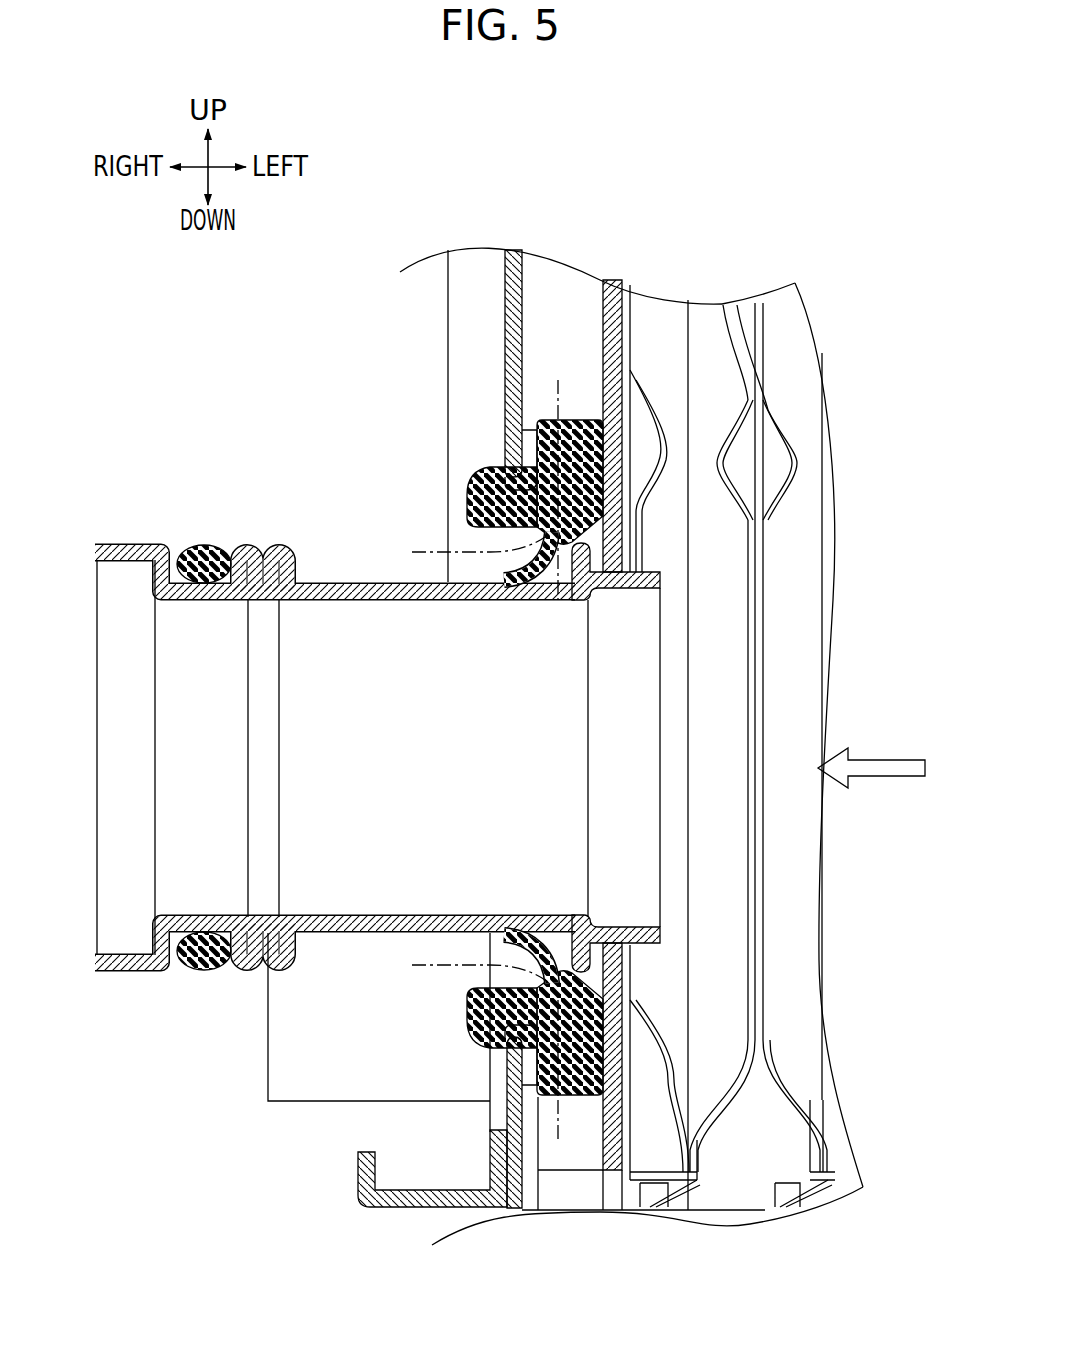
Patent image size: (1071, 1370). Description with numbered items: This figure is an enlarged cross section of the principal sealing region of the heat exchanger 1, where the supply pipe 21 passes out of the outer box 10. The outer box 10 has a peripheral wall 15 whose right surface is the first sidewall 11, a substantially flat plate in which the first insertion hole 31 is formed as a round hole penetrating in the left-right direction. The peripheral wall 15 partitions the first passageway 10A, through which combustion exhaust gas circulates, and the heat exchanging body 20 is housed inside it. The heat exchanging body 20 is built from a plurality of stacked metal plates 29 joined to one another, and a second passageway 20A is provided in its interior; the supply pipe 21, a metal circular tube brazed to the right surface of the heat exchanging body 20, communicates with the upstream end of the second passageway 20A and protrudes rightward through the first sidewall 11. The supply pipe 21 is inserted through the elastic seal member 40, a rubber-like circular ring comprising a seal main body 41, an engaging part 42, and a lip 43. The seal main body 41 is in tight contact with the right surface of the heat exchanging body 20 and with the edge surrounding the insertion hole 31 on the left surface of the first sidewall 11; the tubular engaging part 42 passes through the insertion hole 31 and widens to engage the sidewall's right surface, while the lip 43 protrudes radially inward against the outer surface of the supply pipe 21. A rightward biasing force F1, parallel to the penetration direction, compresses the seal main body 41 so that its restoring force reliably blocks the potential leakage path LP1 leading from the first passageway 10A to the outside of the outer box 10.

The heat exchanger 1 is at (723, 214).
The outer box 10 is at (444, 350).
The first passageway 10A is at (554, 293).
The first sidewall 11 is at (510, 262).
The peripheral wall 15 is at (502, 290).
The heat exchanging body 20 is at (822, 318).
The second passageway 20A is at (793, 870).
The supply pipe 21 is at (127, 768).
The metal plates 29 is at (615, 332).
The first insertion hole 31 is at (520, 548).
The elastic seal member 40 is at (463, 1015).
The seal main body 41 is at (580, 430).
The engaging part 42 is at (493, 470).
The lip 43 is at (502, 592).
The biasing force F1 is at (871, 758).
The potential leakage path LP1 is at (410, 552).